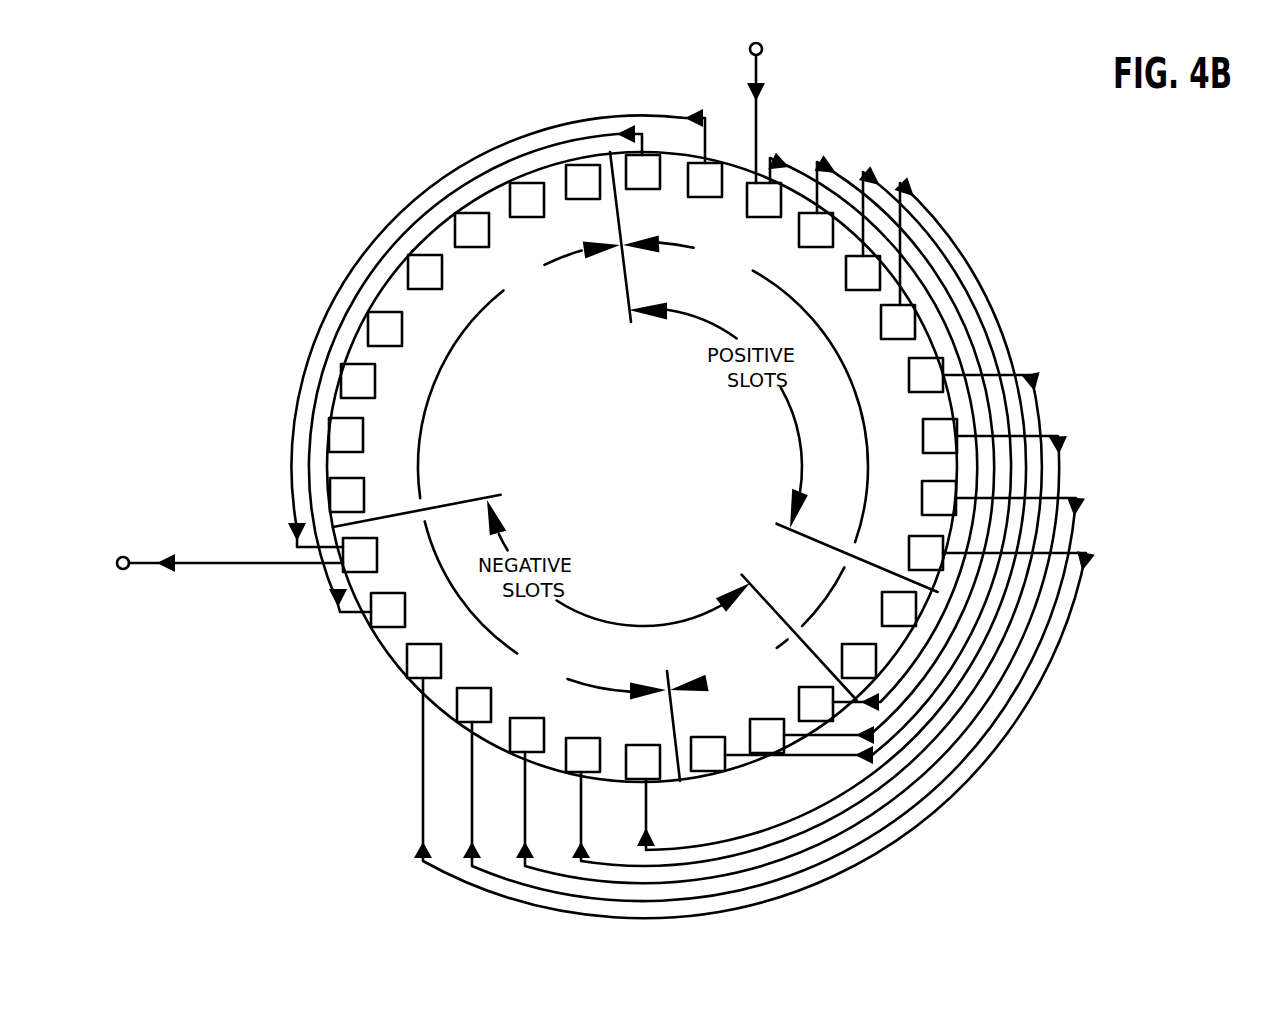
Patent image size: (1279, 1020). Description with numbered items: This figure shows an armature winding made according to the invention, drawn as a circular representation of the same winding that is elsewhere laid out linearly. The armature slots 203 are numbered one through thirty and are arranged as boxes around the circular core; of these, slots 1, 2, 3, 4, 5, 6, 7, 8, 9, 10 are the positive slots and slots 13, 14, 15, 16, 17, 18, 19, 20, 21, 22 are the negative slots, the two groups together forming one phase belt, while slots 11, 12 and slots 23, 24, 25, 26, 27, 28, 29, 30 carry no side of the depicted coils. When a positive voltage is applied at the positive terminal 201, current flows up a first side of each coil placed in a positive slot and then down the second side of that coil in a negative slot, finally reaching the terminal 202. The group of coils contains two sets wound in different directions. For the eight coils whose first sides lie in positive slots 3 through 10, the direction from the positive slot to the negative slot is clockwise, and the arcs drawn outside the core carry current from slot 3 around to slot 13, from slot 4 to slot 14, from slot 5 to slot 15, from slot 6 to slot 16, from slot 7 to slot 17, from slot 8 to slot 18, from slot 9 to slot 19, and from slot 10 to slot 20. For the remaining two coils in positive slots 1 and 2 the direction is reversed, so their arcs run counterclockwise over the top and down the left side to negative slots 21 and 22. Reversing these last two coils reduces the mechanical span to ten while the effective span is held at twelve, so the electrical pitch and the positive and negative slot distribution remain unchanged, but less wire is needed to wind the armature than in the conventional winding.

The slot 1 is at (643, 172).
The slot 2 is at (705, 180).
The slot 3 is at (764, 200).
The slot 4 is at (816, 230).
The slot 5 is at (863, 273).
The slot 6 is at (898, 322).
The slot 7 is at (926, 375).
The slot 8 is at (940, 436).
The slot 9 is at (939, 498).
The slot 10 is at (926, 553).
The slot 11 is at (899, 609).
The slot 12 is at (859, 661).
The slot 13 is at (816, 704).
The slot 14 is at (767, 736).
The slot 15 is at (708, 754).
The slot 16 is at (643, 762).
The slot 17 is at (583, 755).
The slot 18 is at (527, 735).
The slot 19 is at (474, 705).
The slot 20 is at (424, 661).
The slot 21 is at (388, 610).
The slot 22 is at (360, 555).
The slot 23 is at (347, 495).
The slot 24 is at (346, 435).
The slot 25 is at (358, 381).
The slot 26 is at (385, 329).
The slot 27 is at (425, 272).
The slot 28 is at (472, 230).
The slot 29 is at (527, 200).
The slot 30 is at (583, 182).
The positive terminal 201 is at (772, 64).
The terminal 202 is at (165, 527).
The slots 203 is at (451, 305).